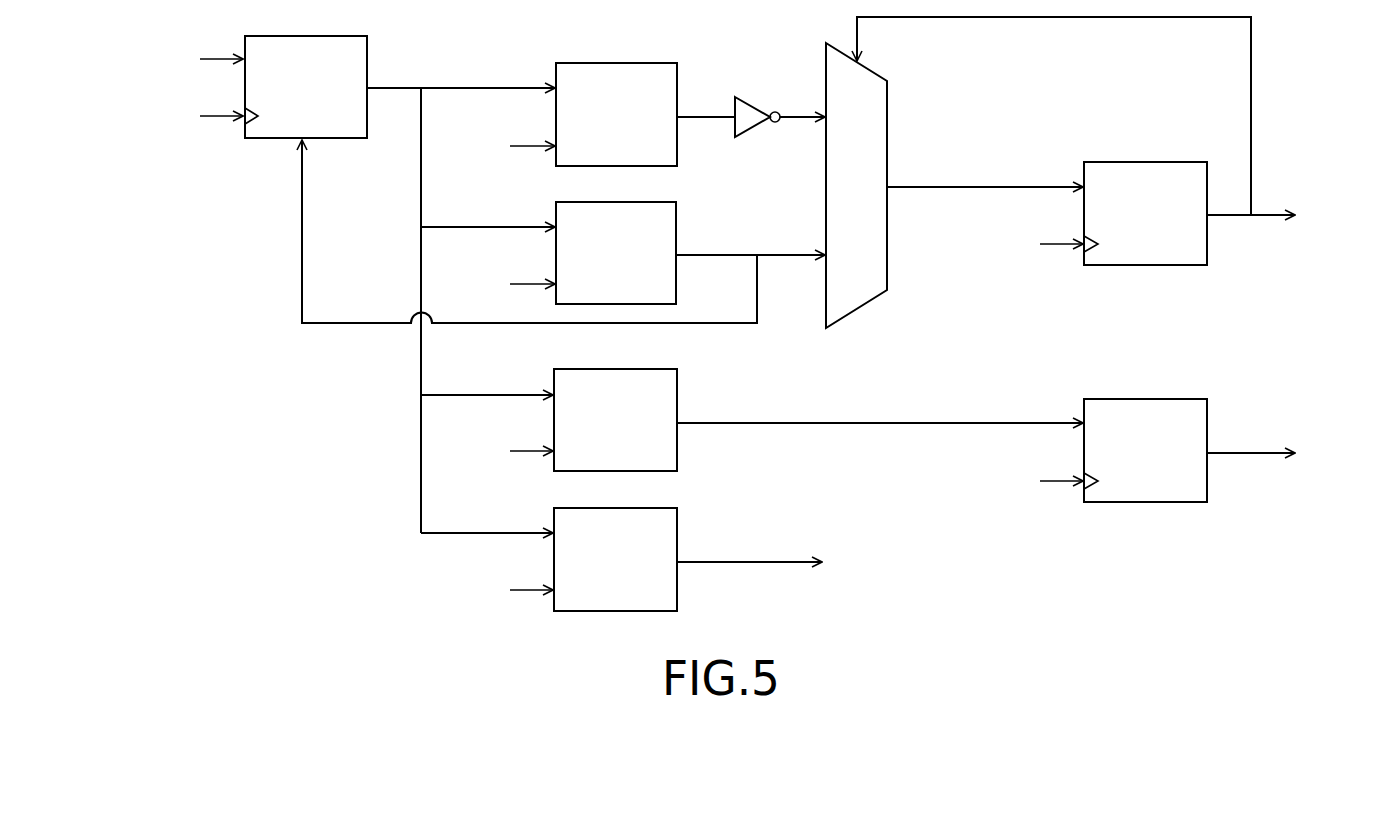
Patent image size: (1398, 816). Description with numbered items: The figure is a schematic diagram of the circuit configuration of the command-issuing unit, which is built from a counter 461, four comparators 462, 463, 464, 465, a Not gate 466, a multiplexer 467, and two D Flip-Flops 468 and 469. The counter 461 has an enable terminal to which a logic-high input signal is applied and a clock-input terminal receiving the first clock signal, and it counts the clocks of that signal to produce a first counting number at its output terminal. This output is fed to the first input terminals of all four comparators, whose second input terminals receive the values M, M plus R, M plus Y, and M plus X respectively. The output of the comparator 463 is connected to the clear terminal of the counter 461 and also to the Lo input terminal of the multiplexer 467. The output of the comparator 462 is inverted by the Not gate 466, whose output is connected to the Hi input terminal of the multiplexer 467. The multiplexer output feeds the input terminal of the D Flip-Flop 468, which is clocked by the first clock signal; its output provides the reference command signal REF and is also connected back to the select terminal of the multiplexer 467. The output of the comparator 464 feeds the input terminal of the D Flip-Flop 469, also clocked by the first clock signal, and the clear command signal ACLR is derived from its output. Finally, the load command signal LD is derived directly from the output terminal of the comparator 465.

The counter 461 is at (303, 50).
The comparator 462 is at (614, 78).
The comparator 463 is at (614, 217).
The comparator 464 is at (614, 385).
The comparator 465 is at (614, 524).
The Not gate 466 is at (743, 120).
The multiplexer 467 is at (875, 148).
The D Flip-Flop 468 is at (1143, 176).
The D Flip-Flop 469 is at (1143, 413).